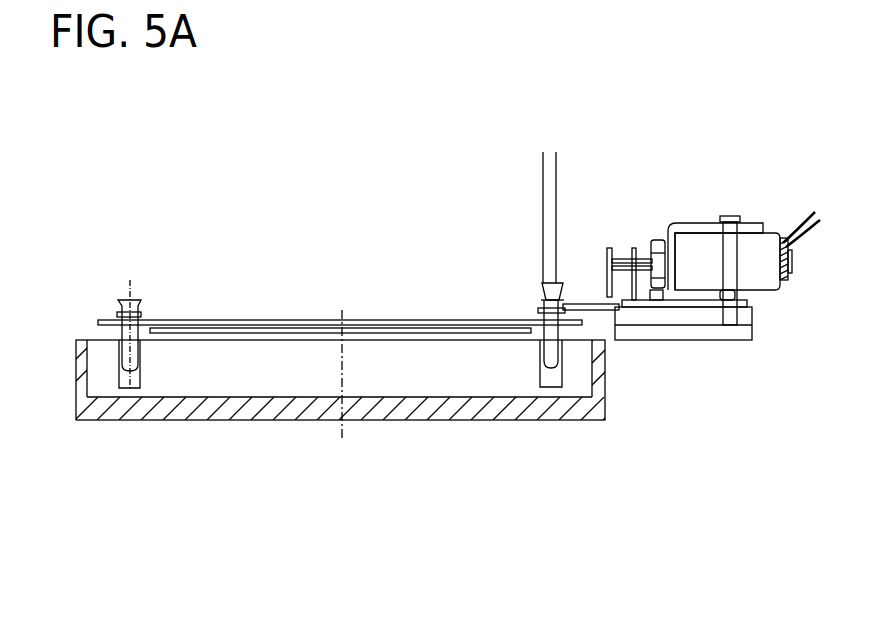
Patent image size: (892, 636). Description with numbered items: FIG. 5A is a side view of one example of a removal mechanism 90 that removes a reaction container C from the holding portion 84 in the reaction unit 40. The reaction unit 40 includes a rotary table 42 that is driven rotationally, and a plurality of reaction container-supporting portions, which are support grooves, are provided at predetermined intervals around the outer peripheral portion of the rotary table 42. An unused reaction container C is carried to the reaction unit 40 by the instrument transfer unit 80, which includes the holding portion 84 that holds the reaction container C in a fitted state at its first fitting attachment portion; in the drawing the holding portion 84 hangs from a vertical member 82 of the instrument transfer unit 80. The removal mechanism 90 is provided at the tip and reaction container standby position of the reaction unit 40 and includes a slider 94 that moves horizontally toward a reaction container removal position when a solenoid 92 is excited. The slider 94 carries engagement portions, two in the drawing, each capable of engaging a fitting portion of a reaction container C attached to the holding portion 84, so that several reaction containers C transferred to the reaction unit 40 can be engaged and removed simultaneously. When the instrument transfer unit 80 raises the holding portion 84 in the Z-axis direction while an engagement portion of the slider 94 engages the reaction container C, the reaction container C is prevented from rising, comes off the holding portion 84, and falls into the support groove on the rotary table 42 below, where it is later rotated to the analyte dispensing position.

The reaction unit 40 is at (313, 279).
The rotary table 42 is at (487, 412).
The instrument transfer unit 80 is at (552, 231).
The supply pipe 82 is at (557, 187).
The holding portion 84 is at (539, 293).
The removal mechanism 90 is at (713, 304).
The solenoid 92 is at (757, 282).
The slider 94 is at (595, 303).
The reaction container C is at (108, 337).